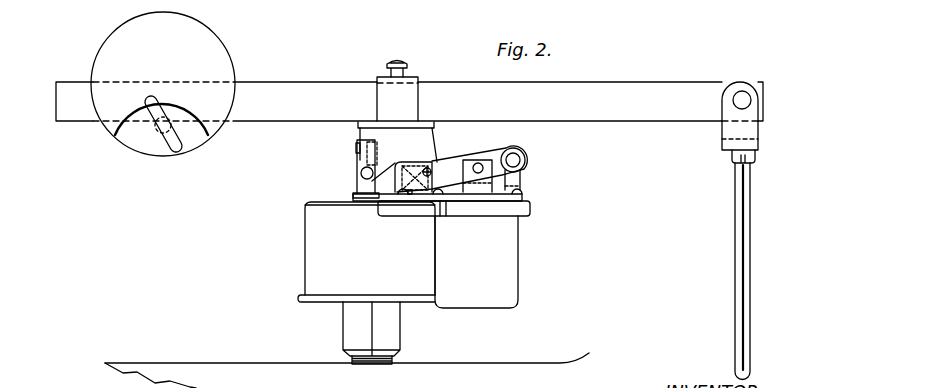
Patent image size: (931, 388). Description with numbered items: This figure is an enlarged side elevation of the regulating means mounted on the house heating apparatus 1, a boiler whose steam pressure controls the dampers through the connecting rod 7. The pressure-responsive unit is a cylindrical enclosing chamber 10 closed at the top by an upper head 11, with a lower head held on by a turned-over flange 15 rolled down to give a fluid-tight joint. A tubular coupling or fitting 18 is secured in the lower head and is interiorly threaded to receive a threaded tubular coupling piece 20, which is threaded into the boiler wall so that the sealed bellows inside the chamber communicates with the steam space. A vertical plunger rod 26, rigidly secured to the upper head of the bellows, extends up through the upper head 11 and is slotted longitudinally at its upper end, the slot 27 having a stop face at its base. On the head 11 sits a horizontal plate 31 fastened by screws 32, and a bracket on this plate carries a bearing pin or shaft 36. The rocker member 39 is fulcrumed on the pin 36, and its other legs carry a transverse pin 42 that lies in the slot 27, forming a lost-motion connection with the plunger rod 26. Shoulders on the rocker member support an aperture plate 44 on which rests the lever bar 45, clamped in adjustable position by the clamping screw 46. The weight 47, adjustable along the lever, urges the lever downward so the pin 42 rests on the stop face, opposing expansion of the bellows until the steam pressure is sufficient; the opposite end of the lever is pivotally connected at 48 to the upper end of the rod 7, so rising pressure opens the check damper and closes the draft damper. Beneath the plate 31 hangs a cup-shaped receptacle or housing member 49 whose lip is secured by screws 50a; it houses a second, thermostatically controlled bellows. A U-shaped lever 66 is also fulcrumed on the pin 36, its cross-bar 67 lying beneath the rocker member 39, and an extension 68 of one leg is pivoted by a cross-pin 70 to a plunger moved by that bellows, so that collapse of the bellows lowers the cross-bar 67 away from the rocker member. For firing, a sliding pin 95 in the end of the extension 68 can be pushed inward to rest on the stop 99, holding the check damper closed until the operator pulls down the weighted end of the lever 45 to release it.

The house heating apparatus 1 is at (353, 367).
The connecting rod 7 is at (749, 255).
The cylindrical enclosing chamber 10 is at (305, 247).
The upper head 11 is at (308, 204).
The turned-over flange 15 is at (298, 298).
The tubular coupling or fitting 18 is at (350, 327).
The threaded tubular coupling piece 20 is at (396, 358).
The plunger rod 26 is at (357, 190).
The slot 27 is at (357, 162).
The horizontal plate 31 is at (531, 208).
The screws 32 is at (368, 201).
The bearing pin or shaft 36 is at (432, 176).
The rocker member 39 is at (397, 142).
The transverse pin 42 is at (361, 173).
The aperture plate 44 is at (398, 121).
The lever bar 45 is at (620, 91).
The clamping screw 46 is at (387, 64).
The weight 47 is at (212, 48).
The pivotal connection 48 is at (744, 95).
The cup-shaped receptacle or housing member 49 is at (510, 268).
The screws 50a is at (445, 214).
The U-shaped lever 66 is at (410, 200).
The cross-bar 67 is at (403, 200).
The extension 68 is at (488, 152).
The cross-pin 70 is at (478, 173).
The sliding pin 95 is at (520, 160).
The stop 99 is at (521, 180).